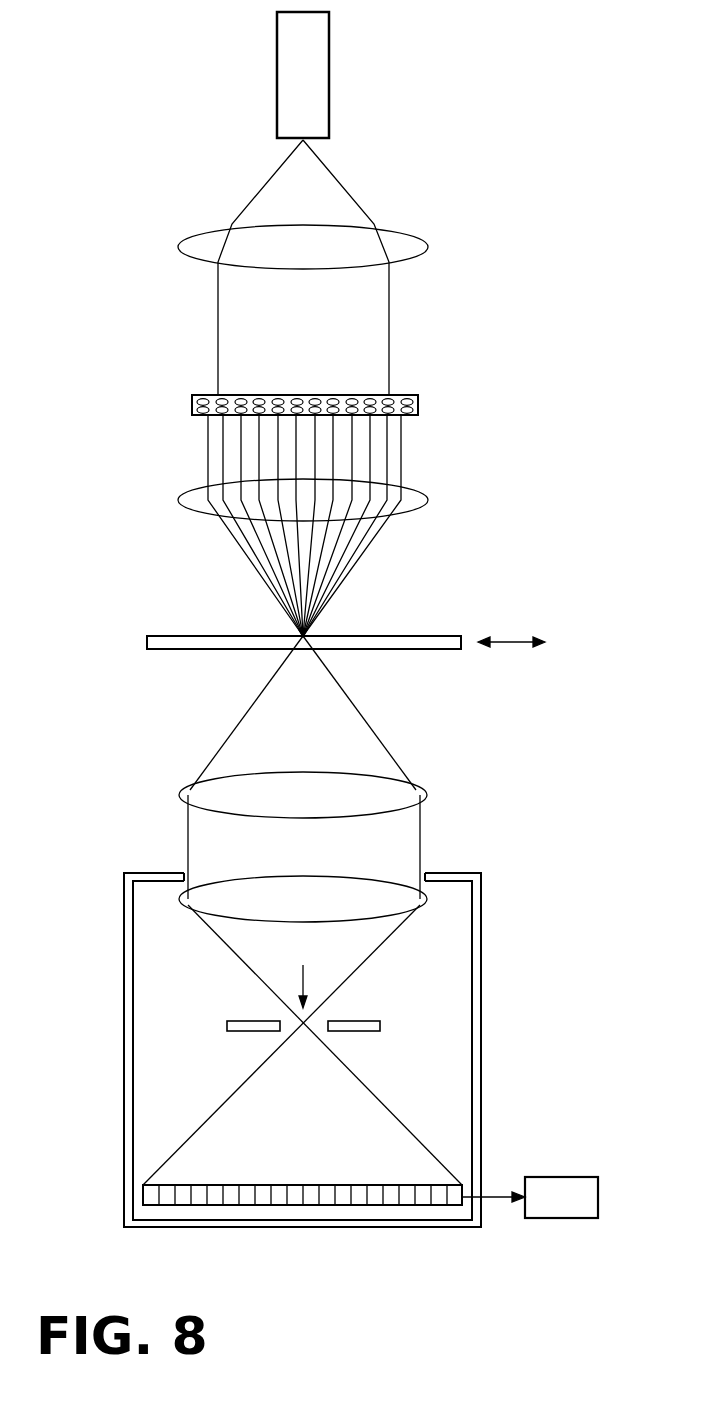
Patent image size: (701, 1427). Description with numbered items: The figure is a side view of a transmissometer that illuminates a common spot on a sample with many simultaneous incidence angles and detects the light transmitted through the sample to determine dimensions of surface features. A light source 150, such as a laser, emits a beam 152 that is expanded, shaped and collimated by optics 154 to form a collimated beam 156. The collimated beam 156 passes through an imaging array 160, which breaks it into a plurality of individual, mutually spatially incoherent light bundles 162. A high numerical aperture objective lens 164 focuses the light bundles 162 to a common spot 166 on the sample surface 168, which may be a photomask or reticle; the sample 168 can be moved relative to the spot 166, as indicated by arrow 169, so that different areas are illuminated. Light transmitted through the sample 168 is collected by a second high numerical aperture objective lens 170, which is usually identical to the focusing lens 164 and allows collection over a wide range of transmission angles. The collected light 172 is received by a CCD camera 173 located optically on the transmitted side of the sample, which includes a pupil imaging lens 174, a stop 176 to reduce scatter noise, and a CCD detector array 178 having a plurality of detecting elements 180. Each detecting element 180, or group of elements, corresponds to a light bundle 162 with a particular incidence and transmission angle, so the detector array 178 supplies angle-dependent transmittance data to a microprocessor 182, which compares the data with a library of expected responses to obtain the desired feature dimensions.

The light source 150 is at (277, 78).
The beam 152 is at (303, 168).
The optics 154 is at (200, 244).
The collimated beam 156 is at (303, 318).
The imaging array 160 is at (192, 405).
The light bundles 162 is at (232, 440).
The objective lens 164 is at (185, 504).
The common spot 166 is at (301, 634).
The sample surface 168 is at (174, 636).
The arrow 169 is at (514, 640).
The objective lens 170 is at (182, 793).
The collected light 172 is at (303, 825).
The CCD camera 173 is at (122, 1051).
The pupil imaging lens 174 is at (173, 919).
The stop 176 is at (382, 1025).
The CCD detector array 178 is at (143, 1193).
The detecting elements 180 is at (248, 1193).
The microprocessor 182 is at (573, 1218).